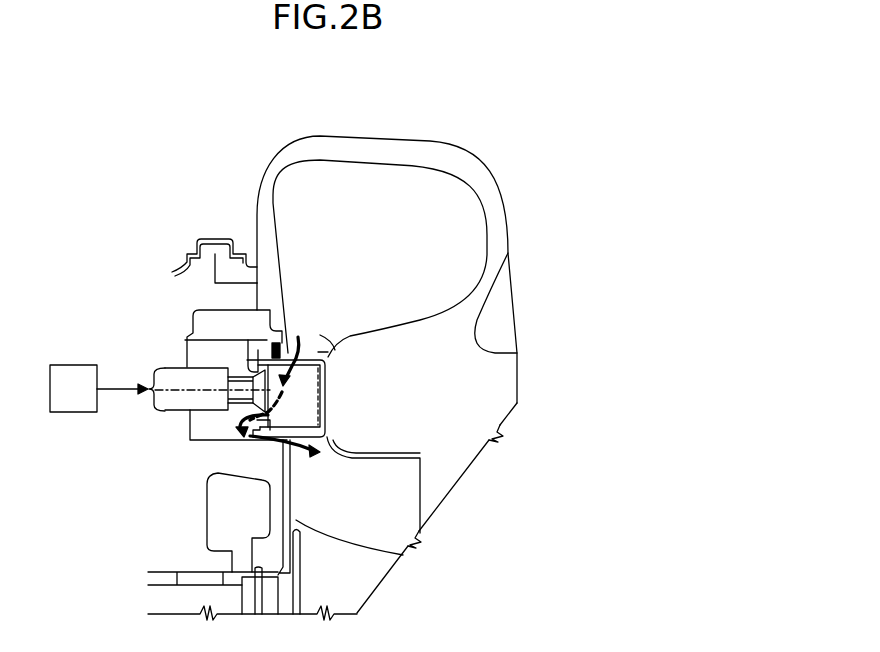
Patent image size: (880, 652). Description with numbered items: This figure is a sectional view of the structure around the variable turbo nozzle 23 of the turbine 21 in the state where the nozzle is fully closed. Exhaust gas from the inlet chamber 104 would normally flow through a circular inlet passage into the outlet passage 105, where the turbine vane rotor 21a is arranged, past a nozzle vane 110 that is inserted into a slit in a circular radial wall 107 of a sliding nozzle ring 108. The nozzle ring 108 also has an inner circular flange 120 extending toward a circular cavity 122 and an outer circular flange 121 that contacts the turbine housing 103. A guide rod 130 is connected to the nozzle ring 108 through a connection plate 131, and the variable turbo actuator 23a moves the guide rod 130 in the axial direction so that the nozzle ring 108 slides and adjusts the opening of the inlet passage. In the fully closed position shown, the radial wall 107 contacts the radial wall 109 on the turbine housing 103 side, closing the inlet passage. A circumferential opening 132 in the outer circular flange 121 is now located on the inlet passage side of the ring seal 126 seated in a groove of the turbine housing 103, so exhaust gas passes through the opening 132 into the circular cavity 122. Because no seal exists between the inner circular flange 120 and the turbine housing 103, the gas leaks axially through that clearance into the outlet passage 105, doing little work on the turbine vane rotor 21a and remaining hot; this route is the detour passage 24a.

The turbine 21 is at (503, 102).
The turbine vane rotor 21a is at (390, 510).
The variable turbo nozzle 23 is at (316, 297).
The variable turbo actuator 23a is at (71, 365).
The detour passage 24a is at (238, 420).
The turbine housing 103 is at (416, 149).
The inlet chamber 104 is at (303, 177).
The outlet passage 105 is at (448, 480).
The radial wall 107 is at (330, 408).
The nozzle ring 108 is at (332, 353).
The radial wall 109 is at (330, 384).
The nozzle vane 110 is at (312, 381).
The inner circular flange 120 is at (298, 422).
The outer circular flange 121 is at (322, 354).
The circular cavity 122 is at (205, 428).
The ring seal 126 is at (270, 330).
The guide rod 130 is at (175, 399).
The connection plate 131 is at (250, 363).
The opening 132 is at (302, 357).